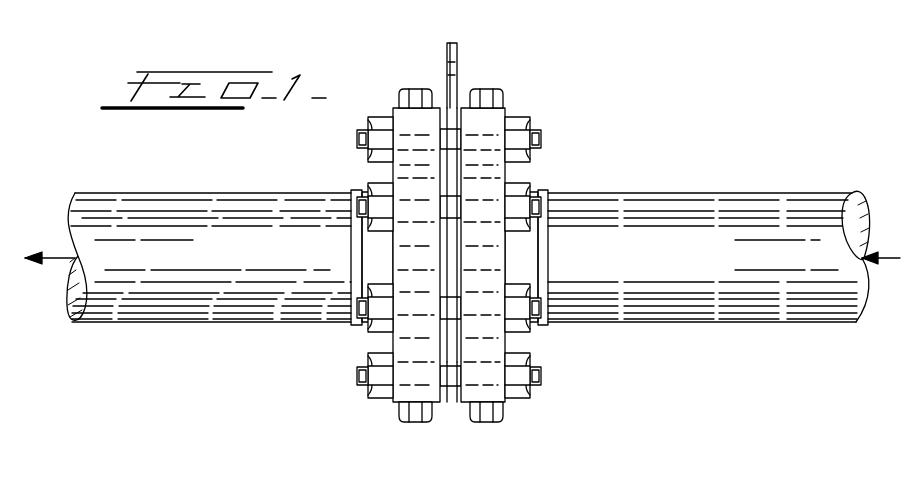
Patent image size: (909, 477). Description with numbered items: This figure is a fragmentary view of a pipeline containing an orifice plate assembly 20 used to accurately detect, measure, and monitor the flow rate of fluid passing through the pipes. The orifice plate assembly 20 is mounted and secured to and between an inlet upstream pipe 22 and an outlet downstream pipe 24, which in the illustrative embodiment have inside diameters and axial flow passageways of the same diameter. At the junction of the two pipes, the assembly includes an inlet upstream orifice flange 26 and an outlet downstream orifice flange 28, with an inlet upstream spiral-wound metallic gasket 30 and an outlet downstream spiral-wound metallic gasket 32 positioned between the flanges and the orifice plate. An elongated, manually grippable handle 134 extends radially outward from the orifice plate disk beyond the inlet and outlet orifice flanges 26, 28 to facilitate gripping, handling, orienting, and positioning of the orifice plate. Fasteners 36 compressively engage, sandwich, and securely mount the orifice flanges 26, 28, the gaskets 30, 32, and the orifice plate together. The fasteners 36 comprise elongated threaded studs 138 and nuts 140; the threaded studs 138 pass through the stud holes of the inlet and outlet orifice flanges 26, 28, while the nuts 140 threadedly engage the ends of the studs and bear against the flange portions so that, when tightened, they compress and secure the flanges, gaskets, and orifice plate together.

The orifice plate assembly 20 is at (342, 342).
The inlet upstream pipe 22 is at (631, 192).
The outlet downstream pipe 24 is at (228, 192).
The inlet upstream orifice flange 26 is at (500, 108).
The outlet downstream orifice flange 28 is at (401, 108).
The inlet upstream spiral wound metallic gasket 30 is at (456, 362).
The outlet downstream spiral wound metallic gasket 32 is at (446, 362).
The fasteners 36 is at (543, 140).
The handle 134 is at (450, 43).
The threaded studs 138 is at (543, 374).
The nuts 140 is at (516, 396).